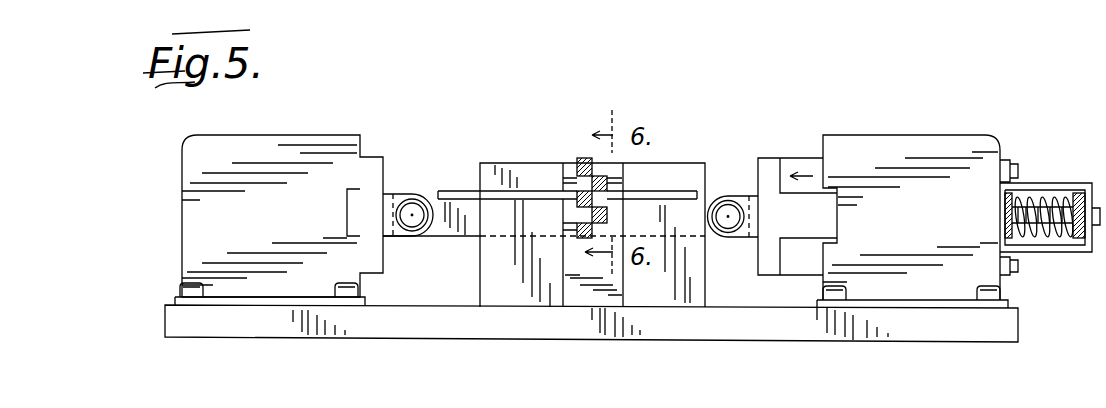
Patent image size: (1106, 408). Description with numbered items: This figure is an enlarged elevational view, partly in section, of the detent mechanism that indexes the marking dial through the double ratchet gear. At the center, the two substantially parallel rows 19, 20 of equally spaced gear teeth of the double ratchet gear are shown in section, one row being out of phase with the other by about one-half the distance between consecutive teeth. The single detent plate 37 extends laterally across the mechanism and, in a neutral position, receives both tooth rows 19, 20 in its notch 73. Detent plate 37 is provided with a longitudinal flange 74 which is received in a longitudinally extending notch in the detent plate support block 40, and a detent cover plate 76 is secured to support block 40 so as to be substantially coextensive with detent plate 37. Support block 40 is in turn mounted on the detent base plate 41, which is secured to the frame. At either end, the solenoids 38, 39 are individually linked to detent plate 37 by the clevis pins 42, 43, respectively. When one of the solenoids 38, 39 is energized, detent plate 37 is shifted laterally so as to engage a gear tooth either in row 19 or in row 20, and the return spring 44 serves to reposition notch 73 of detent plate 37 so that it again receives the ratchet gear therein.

The row of gear teeth 19 is at (583, 160).
The row of gear teeth 20 is at (607, 182).
The detent plate 37 is at (462, 188).
The solenoid 38 is at (297, 150).
The solenoid 39 is at (908, 158).
The detent plate support block 40 is at (688, 285).
The detent base plate 41 is at (763, 331).
The clevis pin 42 is at (412, 218).
The clevis pin 43 is at (730, 208).
The return spring 44 is at (1052, 236).
The notch 73 is at (532, 193).
The flange 74 is at (458, 227).
The detent cover plate 76 is at (685, 177).